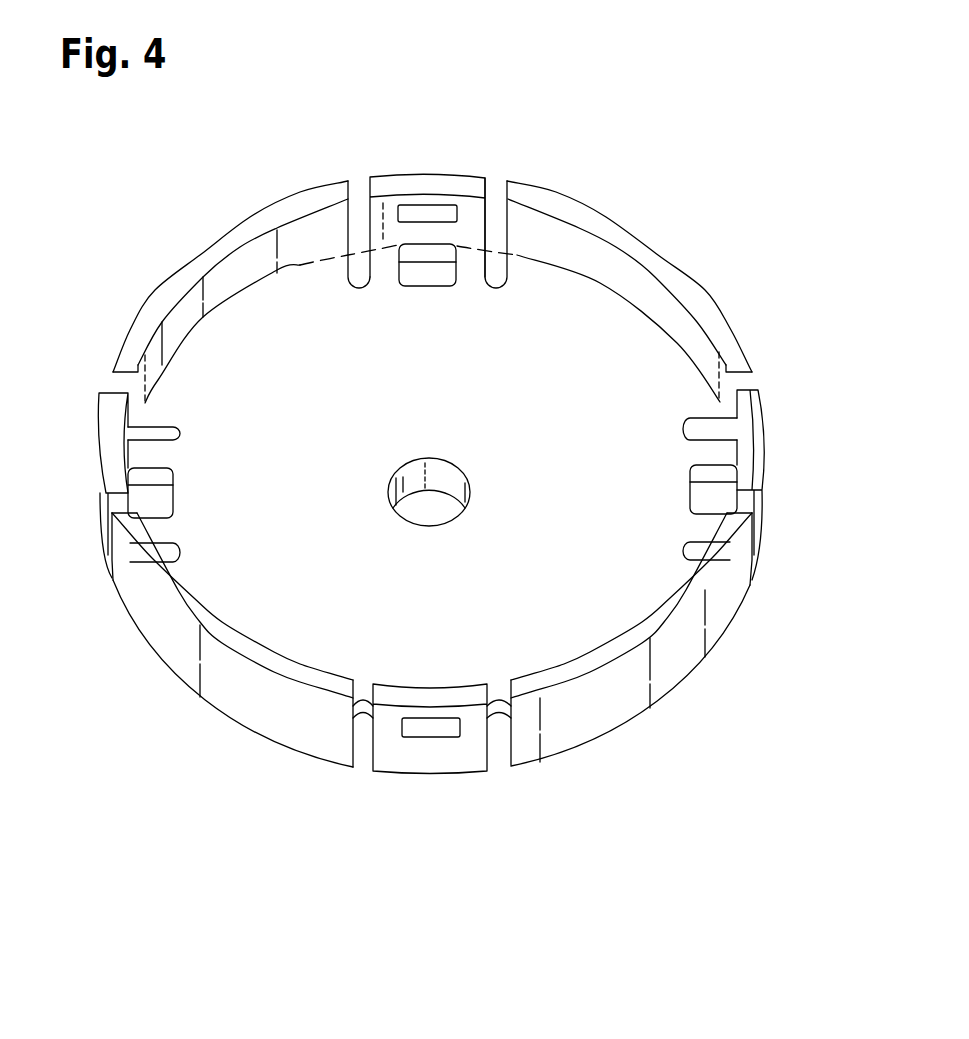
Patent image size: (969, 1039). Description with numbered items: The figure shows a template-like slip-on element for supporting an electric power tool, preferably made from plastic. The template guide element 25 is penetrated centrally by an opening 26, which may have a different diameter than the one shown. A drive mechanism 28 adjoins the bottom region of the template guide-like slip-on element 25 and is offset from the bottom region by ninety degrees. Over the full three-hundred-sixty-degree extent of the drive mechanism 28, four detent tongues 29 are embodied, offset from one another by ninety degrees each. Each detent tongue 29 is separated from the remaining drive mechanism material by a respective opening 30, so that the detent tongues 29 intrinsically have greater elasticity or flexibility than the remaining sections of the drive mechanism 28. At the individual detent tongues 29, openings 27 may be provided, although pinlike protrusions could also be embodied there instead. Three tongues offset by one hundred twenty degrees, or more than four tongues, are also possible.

The template guide element 25 is at (125, 725).
The opening 26 is at (444, 472).
The openings 27 is at (428, 213).
The drive mechanism 28 is at (590, 258).
The detent tongues 29 is at (392, 207).
The opening 30 is at (358, 194).